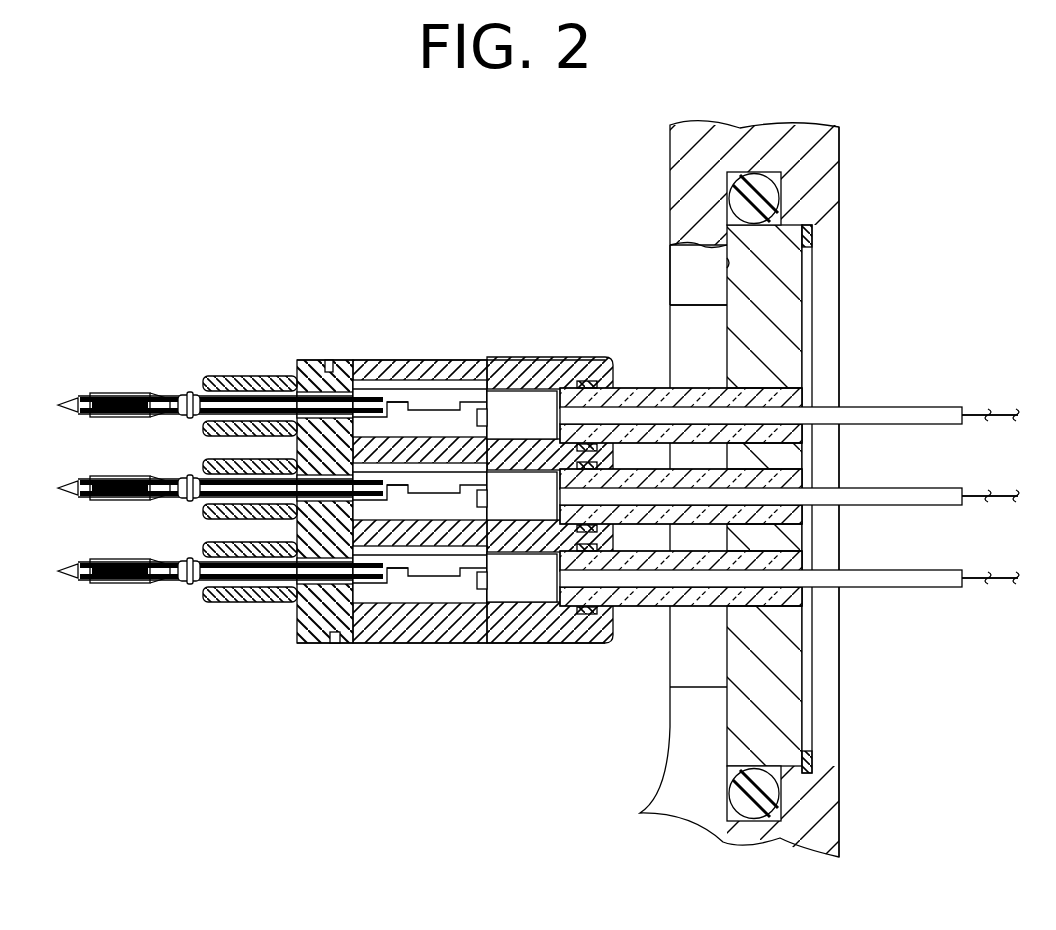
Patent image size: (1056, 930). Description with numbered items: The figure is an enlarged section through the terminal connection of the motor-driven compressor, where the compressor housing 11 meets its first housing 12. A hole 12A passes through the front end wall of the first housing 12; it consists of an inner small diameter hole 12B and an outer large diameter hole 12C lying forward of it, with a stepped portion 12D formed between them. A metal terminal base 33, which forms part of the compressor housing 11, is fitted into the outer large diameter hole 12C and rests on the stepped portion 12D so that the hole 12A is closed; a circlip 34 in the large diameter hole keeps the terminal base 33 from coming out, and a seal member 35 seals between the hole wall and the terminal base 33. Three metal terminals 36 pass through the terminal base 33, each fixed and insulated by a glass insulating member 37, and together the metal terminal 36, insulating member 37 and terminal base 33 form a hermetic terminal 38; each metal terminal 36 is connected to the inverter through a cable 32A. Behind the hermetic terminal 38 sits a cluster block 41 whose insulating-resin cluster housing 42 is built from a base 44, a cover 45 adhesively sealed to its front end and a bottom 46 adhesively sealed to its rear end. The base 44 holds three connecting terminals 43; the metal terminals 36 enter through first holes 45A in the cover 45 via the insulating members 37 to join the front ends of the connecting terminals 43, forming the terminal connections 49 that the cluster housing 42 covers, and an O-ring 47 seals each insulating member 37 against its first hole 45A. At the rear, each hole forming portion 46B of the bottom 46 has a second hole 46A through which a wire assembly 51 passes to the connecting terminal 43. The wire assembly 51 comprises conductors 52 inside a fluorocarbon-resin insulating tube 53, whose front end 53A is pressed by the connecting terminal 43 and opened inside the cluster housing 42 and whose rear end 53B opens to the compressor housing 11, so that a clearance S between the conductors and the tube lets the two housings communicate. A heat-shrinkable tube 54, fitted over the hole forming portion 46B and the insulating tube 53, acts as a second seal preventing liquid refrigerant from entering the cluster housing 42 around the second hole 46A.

The compressor housing 11 is at (840, 136).
The first housing 12 is at (839, 174).
The hole 12A is at (618, 234).
The inner small diameter hole 12B is at (674, 305).
The outer large diameter hole 12C is at (674, 244).
The stepped portion 12D is at (728, 262).
The terminal base 33 is at (793, 298).
The circlip 34 is at (813, 330).
The seal member 35 is at (781, 187).
The metal terminal 36 is at (937, 425).
The insulating member 37 is at (701, 386).
The hermetic terminal 38 is at (872, 385).
The cable 32A is at (990, 403).
The cluster block 41 is at (291, 296).
The cluster housing 42 is at (446, 360).
The connecting terminal 43 is at (500, 393).
The base 44 is at (404, 360).
The cover 45 is at (540, 357).
The first hole 45A is at (620, 386).
The bottom 46 is at (300, 360).
The second hole 46A is at (228, 376).
The hole forming portion 46B is at (255, 378).
The O-ring 47 is at (586, 381).
The terminal connection 49 is at (466, 422).
The wire assembly 51 is at (106, 393).
The conductor 52 is at (58, 405).
The insulating tube 53 is at (140, 393).
The front end of insulating tube 53A is at (356, 389).
The rear end of insulating tube 53B is at (72, 398).
The heat-shrinkable tube 54 is at (190, 395).
The clearance S is at (165, 412).